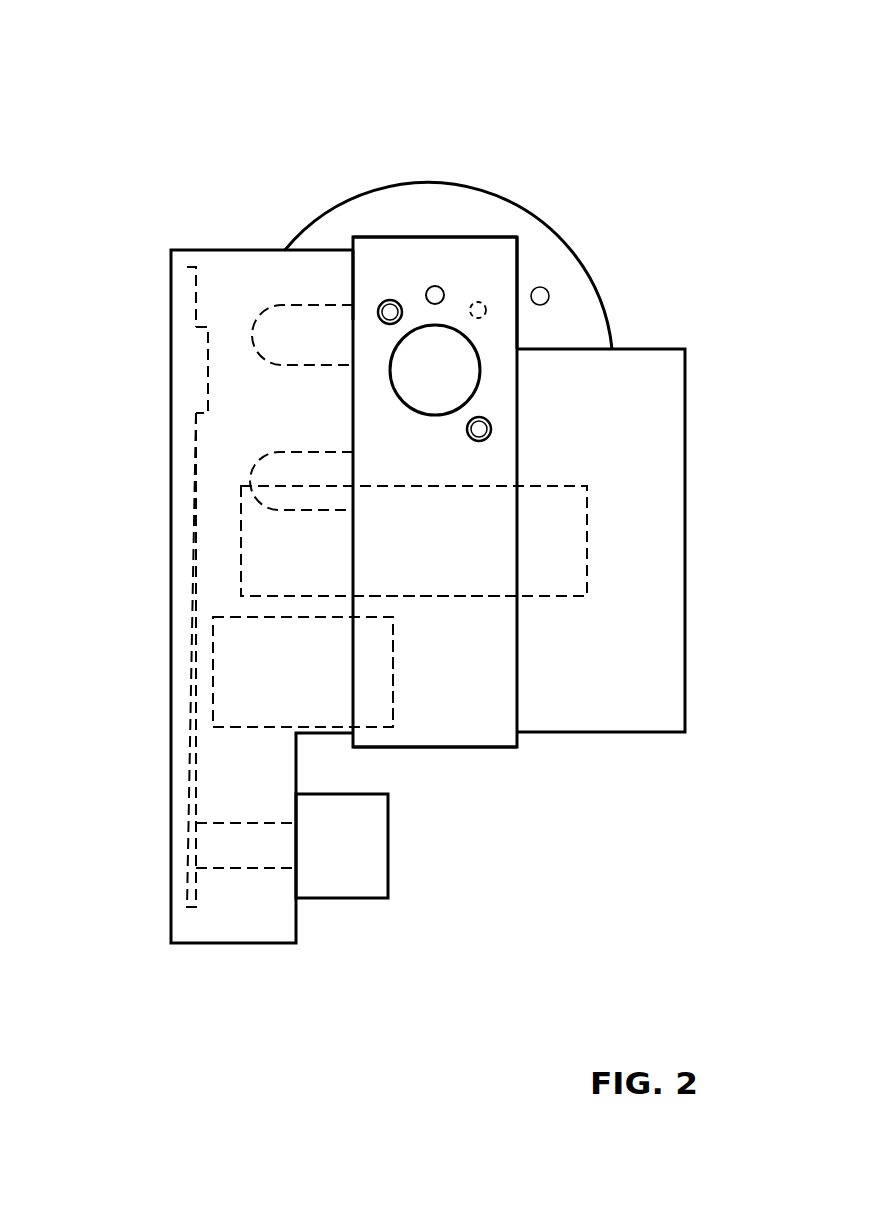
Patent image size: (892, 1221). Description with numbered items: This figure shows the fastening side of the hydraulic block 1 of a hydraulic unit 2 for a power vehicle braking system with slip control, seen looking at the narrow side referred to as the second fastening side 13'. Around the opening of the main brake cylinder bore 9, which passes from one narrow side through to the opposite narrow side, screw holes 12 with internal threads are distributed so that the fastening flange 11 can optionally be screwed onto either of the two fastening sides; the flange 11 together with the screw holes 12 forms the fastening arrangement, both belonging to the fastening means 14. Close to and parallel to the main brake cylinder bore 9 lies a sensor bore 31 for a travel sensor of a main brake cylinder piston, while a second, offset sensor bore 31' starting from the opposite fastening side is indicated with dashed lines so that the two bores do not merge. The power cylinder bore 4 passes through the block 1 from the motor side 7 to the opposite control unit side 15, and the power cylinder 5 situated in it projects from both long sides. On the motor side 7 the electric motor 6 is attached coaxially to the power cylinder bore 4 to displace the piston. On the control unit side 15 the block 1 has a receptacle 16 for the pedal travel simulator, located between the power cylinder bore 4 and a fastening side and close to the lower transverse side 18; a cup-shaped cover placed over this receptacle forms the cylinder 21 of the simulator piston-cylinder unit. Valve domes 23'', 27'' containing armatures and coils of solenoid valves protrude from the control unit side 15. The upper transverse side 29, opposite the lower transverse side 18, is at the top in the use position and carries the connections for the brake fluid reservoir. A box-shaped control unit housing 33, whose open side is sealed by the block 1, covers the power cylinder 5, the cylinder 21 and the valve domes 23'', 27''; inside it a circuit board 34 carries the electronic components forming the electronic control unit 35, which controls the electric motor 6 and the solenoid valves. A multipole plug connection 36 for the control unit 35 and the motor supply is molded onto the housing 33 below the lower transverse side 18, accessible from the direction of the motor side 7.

The hydraulic unit 2 is at (222, 122).
The hydraulic block 1 is at (487, 257).
The power cylinder bore 4 is at (453, 597).
The power cylinder 5 is at (241, 550).
The electric motor 6 is at (640, 708).
The motor side 7 is at (518, 333).
The main brake cylinder bore 9 is at (470, 342).
The fastening flange 11 is at (538, 248).
The screw holes 12 is at (393, 300).
The fastening means 14 is at (535, 287).
The second fastening side 13' is at (382, 434).
The control unit side 15 is at (352, 283).
The receptacle 16 is at (393, 683).
The lower transverse side 18 is at (508, 760).
The cylinder 21 is at (213, 683).
The valve dome 23'' is at (302, 280).
The valve dome 27'' is at (231, 481).
The upper transverse side 29 is at (369, 236).
The sensor bore 31 is at (455, 216).
The hidden hole 31' is at (551, 270).
The control unit housing 33 is at (235, 920).
The circuit board 34 is at (200, 420).
The electronic control unit 35 is at (207, 347).
The plug connection 36 is at (343, 873).